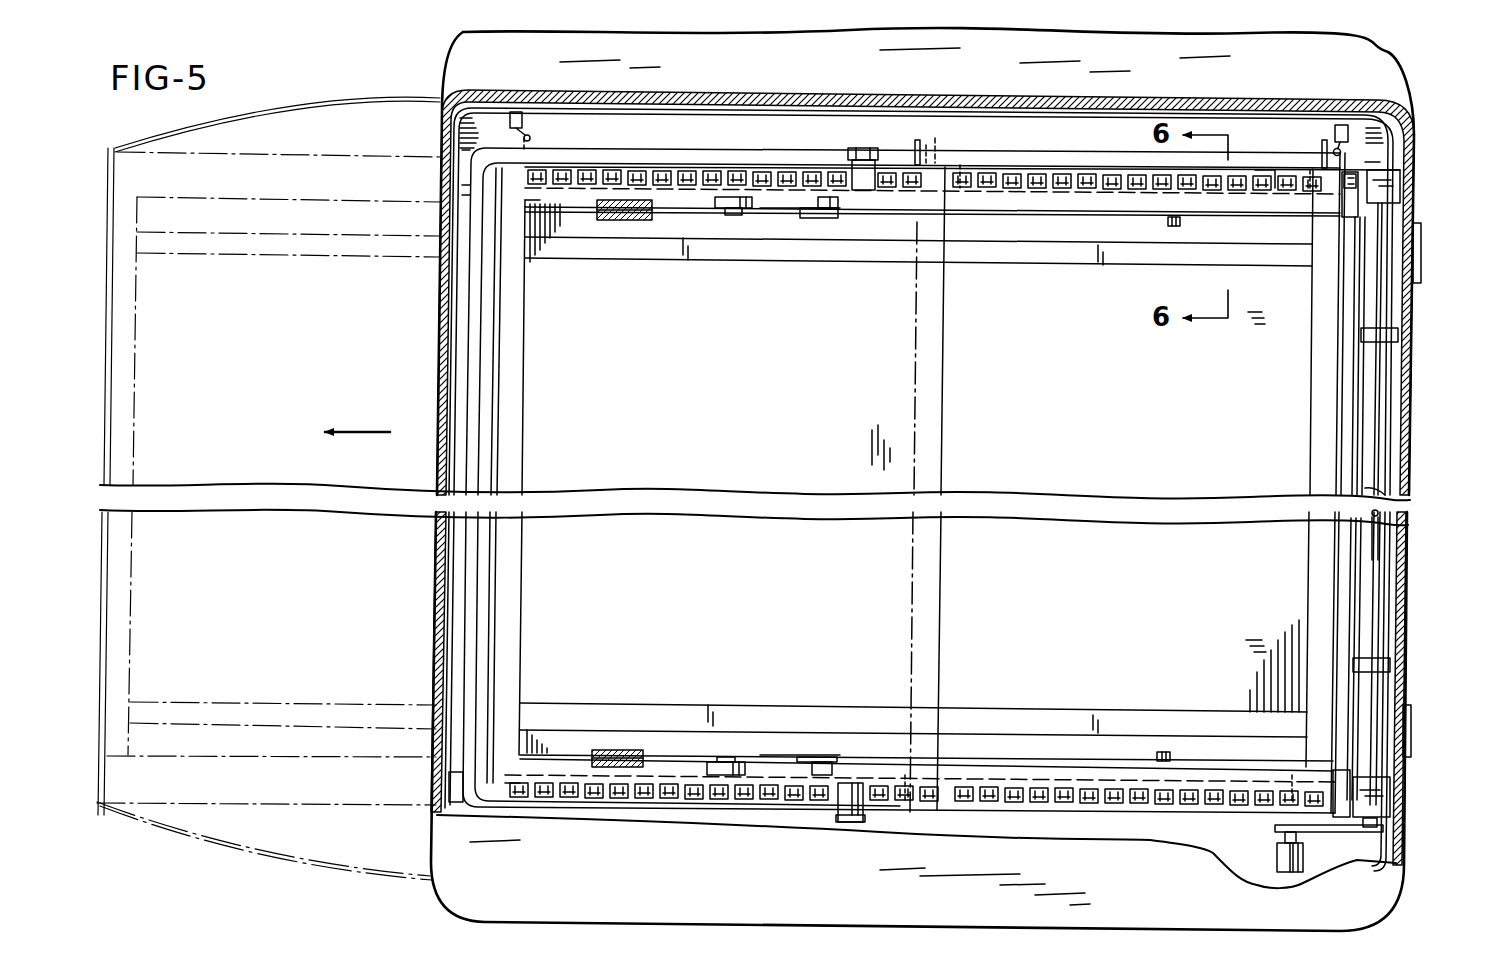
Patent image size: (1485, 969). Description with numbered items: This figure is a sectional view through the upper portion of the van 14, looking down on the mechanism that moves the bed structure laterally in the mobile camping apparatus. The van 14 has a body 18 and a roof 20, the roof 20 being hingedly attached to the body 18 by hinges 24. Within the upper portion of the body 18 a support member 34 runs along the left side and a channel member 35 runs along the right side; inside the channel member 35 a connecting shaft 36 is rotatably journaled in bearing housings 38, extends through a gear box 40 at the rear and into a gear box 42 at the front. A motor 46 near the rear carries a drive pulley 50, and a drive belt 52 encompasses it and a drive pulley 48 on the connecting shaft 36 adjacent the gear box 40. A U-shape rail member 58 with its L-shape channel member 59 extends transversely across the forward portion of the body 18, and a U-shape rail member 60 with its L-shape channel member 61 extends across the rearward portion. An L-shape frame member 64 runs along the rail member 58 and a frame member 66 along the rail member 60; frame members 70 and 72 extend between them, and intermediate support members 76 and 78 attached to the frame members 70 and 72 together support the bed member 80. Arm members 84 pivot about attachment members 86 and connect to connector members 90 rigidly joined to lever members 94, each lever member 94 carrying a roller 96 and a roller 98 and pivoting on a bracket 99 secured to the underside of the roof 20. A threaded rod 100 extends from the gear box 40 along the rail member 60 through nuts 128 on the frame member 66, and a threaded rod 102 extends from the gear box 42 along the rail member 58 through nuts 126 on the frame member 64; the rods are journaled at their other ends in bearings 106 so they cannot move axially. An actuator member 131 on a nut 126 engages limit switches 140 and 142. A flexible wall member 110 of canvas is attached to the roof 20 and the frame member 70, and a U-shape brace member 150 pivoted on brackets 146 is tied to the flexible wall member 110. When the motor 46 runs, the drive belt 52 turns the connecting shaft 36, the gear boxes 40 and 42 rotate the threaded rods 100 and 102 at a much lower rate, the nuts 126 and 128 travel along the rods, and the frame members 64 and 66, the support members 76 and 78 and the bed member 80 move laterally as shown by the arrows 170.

The van 14 is at (412, 62).
The body 18 is at (786, 74).
The roof 20 is at (1068, 92).
The hinge 24 is at (1423, 258).
The support member 34 is at (456, 641).
The channel member 35 is at (1392, 448).
The connecting shaft 36 is at (1390, 521).
The bearing housing 38 is at (1392, 336).
The gear box 40 is at (1378, 822).
The gear box 42 is at (1390, 190).
The motor 46 is at (1290, 875).
The drive pulley 48 is at (1395, 872).
The drive pulley 50 is at (1280, 832).
The drive belt 52 is at (1327, 833).
The U-shape rail member 58 is at (446, 193).
The L-shape channel member 59 is at (447, 152).
The U-shape rail member 60 is at (456, 772).
The L-shape channel member 61 is at (453, 800).
The L-shape frame member 64 is at (1263, 172).
The frame member 66 is at (1088, 811).
The frame member 70 is at (525, 402).
The frame member 72 is at (1313, 408).
The intermediate support member 76 is at (985, 262).
The intermediate support member 78 is at (985, 716).
The bed member 80 is at (258, 444).
The arm member 84 is at (1053, 215).
The attachment member 86 is at (1180, 224).
The connector member 90 is at (832, 220).
The lever member 94 is at (770, 218).
The roller 96 is at (733, 196).
The roller 98 is at (826, 196).
The bracket 99 is at (637, 222).
The threaded rod 100 is at (1010, 814).
The threaded rod 102 is at (1078, 170).
The bearing 106 is at (530, 206).
The flexible wall member 110 is at (298, 103).
The nut 126 is at (958, 166).
The nut 128 is at (910, 813).
The actuator member 131 is at (918, 138).
The limit switch 140 is at (1343, 125).
The limit switch 142 is at (514, 112).
The bracket 146 is at (871, 148).
The U-shape brace member 150 is at (663, 149).
The arrow 170 is at (354, 432).